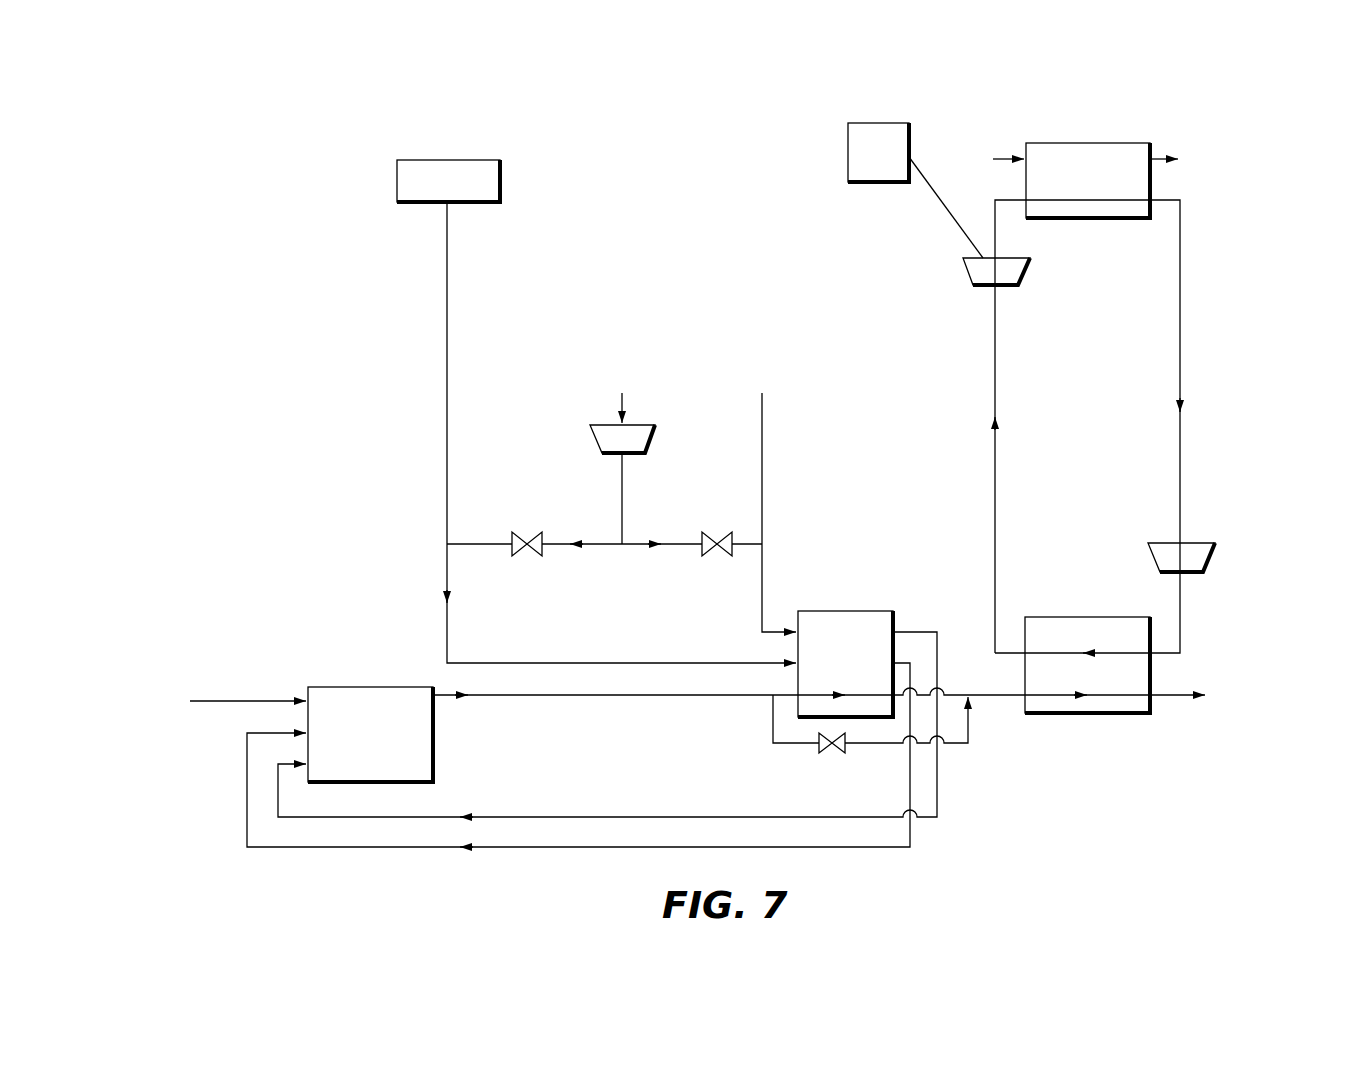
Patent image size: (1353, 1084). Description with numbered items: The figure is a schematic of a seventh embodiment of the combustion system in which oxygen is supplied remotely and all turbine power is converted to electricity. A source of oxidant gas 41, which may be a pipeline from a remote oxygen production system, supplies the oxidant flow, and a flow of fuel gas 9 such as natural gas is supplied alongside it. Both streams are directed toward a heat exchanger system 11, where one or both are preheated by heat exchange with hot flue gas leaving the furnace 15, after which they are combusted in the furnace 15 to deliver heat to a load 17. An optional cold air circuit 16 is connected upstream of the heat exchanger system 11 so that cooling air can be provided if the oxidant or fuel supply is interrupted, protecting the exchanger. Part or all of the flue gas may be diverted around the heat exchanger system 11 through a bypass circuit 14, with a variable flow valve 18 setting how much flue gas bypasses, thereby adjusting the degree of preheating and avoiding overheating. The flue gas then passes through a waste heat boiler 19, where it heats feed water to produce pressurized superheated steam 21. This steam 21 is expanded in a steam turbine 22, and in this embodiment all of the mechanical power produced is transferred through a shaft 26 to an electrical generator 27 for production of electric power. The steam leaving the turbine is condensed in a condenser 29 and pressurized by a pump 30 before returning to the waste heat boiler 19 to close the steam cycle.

The fuel gas 9 is at (770, 419).
The heat exchanger system 11 is at (857, 630).
The bypass circuit 14 is at (776, 752).
The furnace 15 is at (343, 706).
The cold air circuit 16 is at (631, 404).
The load 17 is at (224, 691).
The variable flow valve 18 is at (834, 760).
The waste heat boiler 19 is at (1101, 634).
The superheated steam 21 is at (988, 481).
The steam turbine 22 is at (1033, 267).
The shaft 26 is at (949, 198).
The electrical generator 27 is at (862, 139).
The condenser 29 is at (1089, 162).
The pump 30 is at (1220, 551).
The source of oxidant gas 41 is at (412, 184).